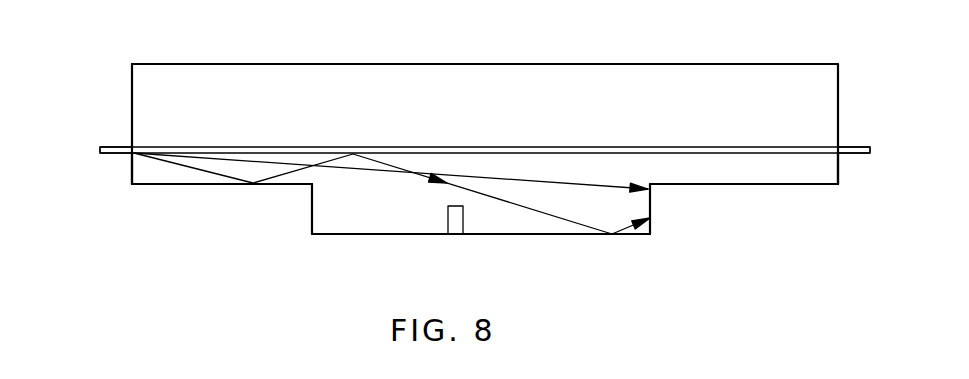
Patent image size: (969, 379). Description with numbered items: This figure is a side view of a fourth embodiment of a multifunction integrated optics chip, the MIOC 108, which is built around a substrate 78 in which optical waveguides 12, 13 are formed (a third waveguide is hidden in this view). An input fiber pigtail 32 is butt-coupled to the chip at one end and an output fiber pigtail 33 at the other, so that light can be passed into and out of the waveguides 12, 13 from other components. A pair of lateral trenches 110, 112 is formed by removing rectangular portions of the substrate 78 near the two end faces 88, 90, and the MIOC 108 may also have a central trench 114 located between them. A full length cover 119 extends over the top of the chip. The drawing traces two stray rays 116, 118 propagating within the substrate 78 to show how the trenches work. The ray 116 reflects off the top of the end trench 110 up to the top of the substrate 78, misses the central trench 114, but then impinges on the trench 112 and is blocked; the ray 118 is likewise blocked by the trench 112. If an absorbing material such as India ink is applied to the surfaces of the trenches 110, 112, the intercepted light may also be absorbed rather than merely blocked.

The optical waveguide 12 is at (180, 147).
The optical waveguide 13 is at (612, 147).
The input fiber pigtail 32 is at (107, 147).
The output fiber pigtail 33 is at (855, 147).
The full length cover 119 is at (410, 64).
The end face 88 is at (132, 170).
The end face 90 is at (838, 170).
The ray 118 is at (493, 198).
The ray 116 is at (182, 167).
The lateral trench 110 is at (243, 203).
The lateral trench 112 is at (733, 207).
The MIOC 108 is at (365, 240).
The central trench 114 is at (448, 222).
The substrate 78 is at (565, 237).